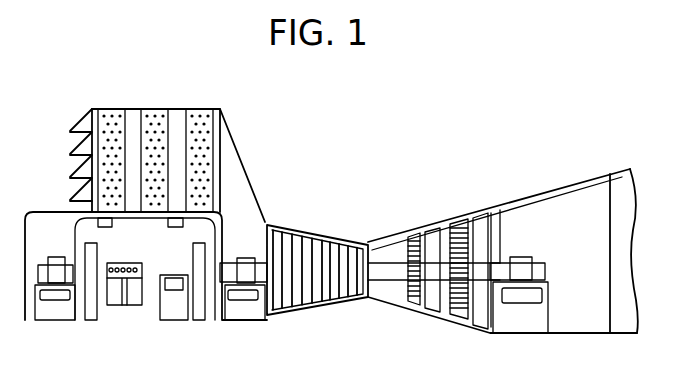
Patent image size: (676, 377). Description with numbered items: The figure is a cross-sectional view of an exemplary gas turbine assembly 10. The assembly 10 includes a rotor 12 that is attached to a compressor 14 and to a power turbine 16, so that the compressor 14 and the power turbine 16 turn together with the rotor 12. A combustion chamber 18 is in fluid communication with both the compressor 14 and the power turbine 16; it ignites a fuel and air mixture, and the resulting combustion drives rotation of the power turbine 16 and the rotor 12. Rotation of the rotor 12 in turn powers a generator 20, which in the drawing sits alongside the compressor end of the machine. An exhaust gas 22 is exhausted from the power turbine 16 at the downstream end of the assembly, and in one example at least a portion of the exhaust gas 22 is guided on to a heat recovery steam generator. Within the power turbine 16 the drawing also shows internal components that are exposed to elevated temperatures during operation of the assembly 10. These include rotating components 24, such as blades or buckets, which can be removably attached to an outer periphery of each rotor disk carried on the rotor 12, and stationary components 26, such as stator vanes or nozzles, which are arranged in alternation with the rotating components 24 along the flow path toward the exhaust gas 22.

The gas turbine assembly 10 is at (85, 85).
The rotor 12 is at (387, 296).
The compressor 14 is at (303, 246).
The power turbine 16 is at (452, 224).
The combustion chamber 18 is at (390, 243).
The generator 20 is at (160, 302).
The exhaust gas 22 is at (532, 208).
The rotating components 24 is at (460, 313).
The stationary components 26 is at (433, 236).